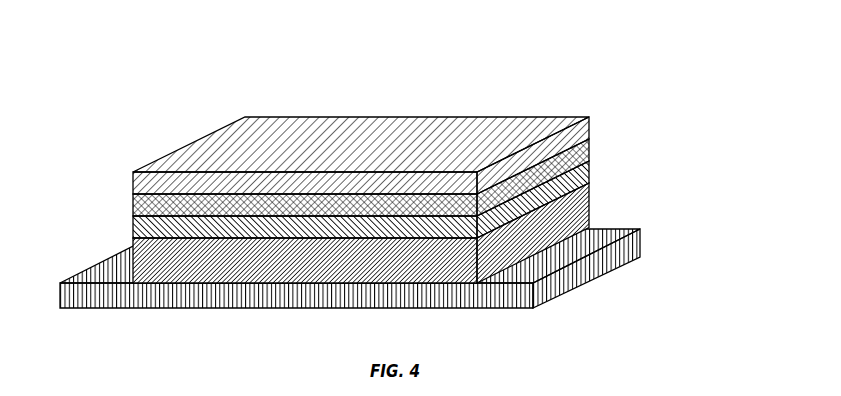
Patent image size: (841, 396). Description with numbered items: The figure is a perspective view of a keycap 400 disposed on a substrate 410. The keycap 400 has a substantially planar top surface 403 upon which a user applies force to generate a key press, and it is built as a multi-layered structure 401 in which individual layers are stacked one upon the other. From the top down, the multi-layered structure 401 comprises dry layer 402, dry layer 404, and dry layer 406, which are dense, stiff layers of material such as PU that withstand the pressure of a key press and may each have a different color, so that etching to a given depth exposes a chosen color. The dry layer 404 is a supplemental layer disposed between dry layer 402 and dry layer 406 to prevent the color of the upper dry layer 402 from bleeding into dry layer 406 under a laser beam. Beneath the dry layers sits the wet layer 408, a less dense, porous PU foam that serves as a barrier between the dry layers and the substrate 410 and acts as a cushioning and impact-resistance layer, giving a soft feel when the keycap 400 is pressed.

The keycap 400 is at (397, 166).
The multi-layered structure 401 is at (373, 180).
The dry layer 402 is at (428, 135).
The top surface 403 is at (456, 151).
The dry layer 404 is at (589, 152).
The dry layer 406 is at (589, 173).
The wet layer 408 is at (589, 208).
The substrate 410 is at (642, 243).